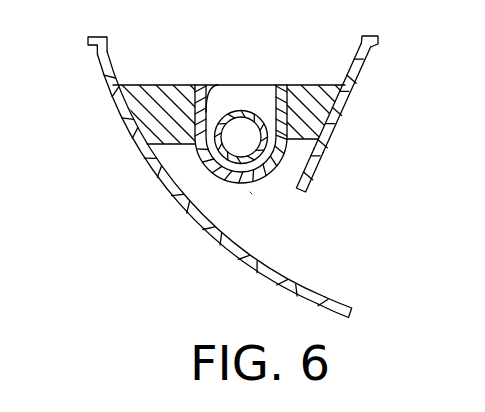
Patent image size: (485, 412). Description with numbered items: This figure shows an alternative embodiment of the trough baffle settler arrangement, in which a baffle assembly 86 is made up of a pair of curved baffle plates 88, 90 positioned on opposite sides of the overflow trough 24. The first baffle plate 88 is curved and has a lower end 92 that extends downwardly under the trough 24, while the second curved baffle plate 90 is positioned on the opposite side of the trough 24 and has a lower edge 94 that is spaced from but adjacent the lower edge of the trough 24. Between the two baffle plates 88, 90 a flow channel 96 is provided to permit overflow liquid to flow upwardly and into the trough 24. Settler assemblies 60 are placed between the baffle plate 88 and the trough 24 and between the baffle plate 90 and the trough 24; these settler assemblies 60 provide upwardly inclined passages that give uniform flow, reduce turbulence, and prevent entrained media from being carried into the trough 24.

The overflow trough 24 is at (217, 86).
The settler assembly 60 is at (157, 121).
The baffle assembly 86 is at (140, 208).
The curved baffle plate 88 is at (208, 232).
The second curved baffle plate 90 is at (323, 160).
The lower end 92 is at (295, 293).
The lower edge 94 is at (302, 197).
The flow channel 96 is at (255, 195).